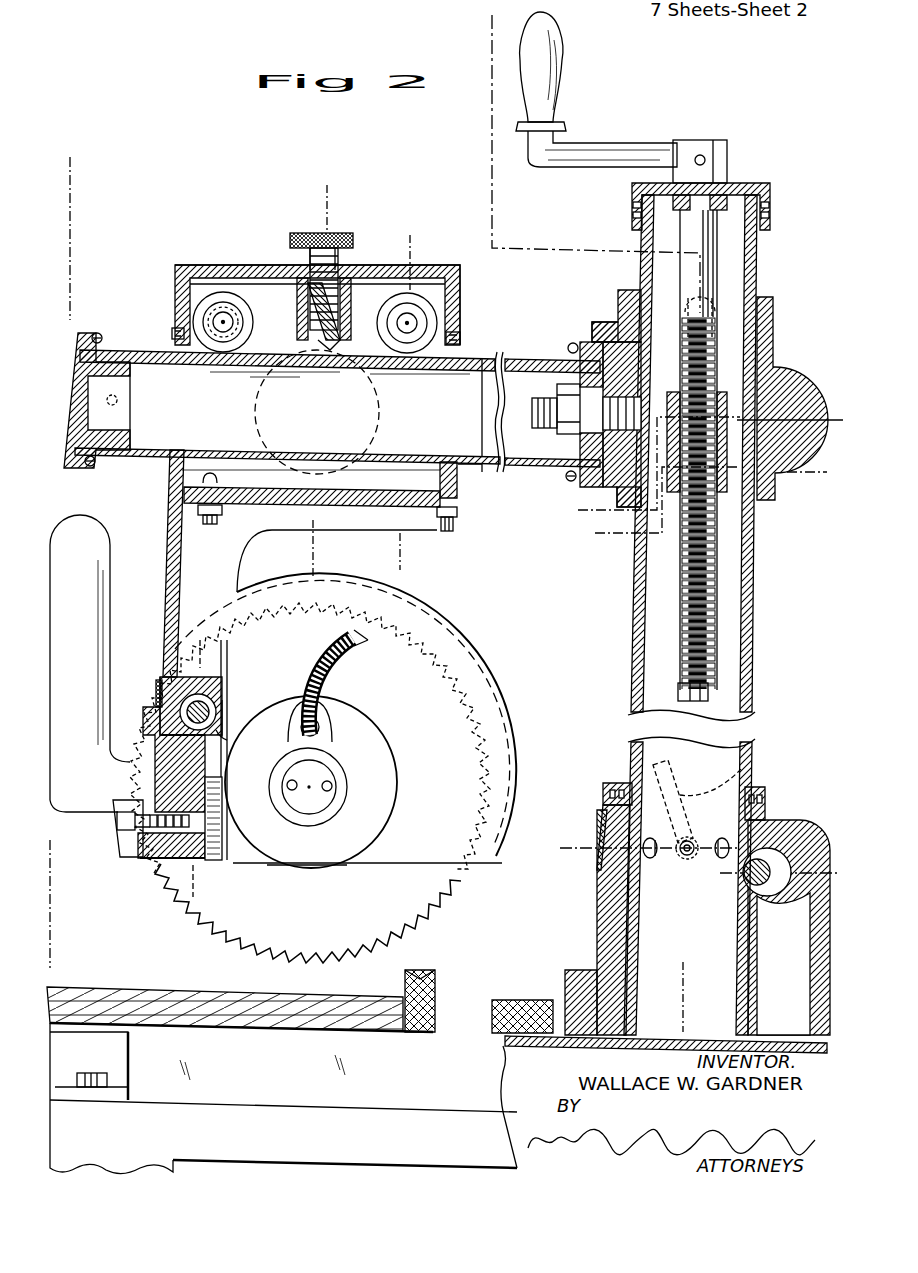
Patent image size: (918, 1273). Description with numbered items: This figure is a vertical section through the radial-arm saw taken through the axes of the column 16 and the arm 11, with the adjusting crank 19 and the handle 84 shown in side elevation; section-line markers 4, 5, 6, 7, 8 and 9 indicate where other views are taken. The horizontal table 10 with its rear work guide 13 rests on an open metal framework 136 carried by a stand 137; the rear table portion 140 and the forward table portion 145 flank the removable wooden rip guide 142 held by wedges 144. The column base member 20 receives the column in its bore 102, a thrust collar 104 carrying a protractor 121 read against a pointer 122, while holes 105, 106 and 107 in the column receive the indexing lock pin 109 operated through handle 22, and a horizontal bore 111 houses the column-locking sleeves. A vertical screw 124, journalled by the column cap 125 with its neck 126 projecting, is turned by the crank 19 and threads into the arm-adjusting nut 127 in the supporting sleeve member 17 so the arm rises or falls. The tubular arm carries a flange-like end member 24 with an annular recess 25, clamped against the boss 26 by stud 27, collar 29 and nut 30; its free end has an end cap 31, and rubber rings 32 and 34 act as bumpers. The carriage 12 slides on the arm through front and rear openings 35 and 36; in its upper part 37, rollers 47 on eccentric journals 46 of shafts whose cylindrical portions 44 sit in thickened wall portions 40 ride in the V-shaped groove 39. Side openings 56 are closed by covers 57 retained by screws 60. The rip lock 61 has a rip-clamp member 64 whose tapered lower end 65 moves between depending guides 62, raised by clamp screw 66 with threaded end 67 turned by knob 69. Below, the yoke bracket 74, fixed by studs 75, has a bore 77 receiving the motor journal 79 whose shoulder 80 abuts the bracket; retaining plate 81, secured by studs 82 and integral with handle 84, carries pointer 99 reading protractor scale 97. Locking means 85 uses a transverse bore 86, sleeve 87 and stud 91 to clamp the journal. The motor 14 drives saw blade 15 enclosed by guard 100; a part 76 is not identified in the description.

The section line 4- 4 is at (62, 187).
The section line 5- 5 is at (386, 243).
The section line 6- 6 is at (512, 18).
The section line 7- 7 is at (585, 498).
The section line 8- 8 is at (600, 528).
The section line 9- 9 is at (568, 838).
The horizontal table 10 is at (176, 652).
The radial arm 11 is at (312, 197).
The carriage 12 is at (485, 316).
The rear work guide 13 is at (565, 975).
The motor 14 is at (378, 762).
The saw blade 15 is at (258, 940).
The vertical column 16 is at (767, 651).
The arm-supporting-and-adjusting member 17 is at (798, 378).
The adjusting crank 19 is at (598, 146).
The column base member 20 is at (590, 938).
The column-indexing handle 22 is at (745, 768).
The flange-like end member 24 is at (600, 322).
The annular recess 25 is at (617, 497).
The boss 26 is at (622, 340).
The stud 27 is at (548, 430).
The collar 29 is at (566, 478).
The nut 30 is at (556, 395).
The end cap 31 is at (76, 368).
The rubber ring 32 is at (582, 342).
The rubber ring 34 is at (102, 336).
The front opening 35 is at (168, 458).
The rear opening 36 is at (468, 470).
The upper part of carriage 37 is at (180, 268).
The V-shaped groove 39 is at (484, 364).
The thickened side wall portion 40 is at (440, 286).
The main cylindrical portion 44 is at (238, 328).
The eccentric journal 46 is at (388, 318).
The carriage-supporting roller 47 is at (450, 308).
The side opening 56 is at (283, 458).
The cover 57 is at (380, 430).
The screws 60 is at (462, 336).
The rip lock 61 is at (363, 260).
The depending guides 62 is at (297, 358).
The rip-clamp member 64 is at (352, 286).
The tapered lower end 65 is at (320, 358).
The clamp screw 66 is at (300, 278).
The threaded lower end 67 is at (233, 322).
The knob 69 is at (343, 240).
The yoke bracket 74 is at (172, 580).
The studs 75 is at (452, 532).
The pivot housing 76 is at (165, 855).
The horizontal bore 77 is at (172, 862).
The journal 79 is at (224, 856).
The annular shoulder 80 is at (226, 735).
The retaining plate 81 is at (132, 856).
The studs 82 is at (118, 822).
The L-shaped handle 84 is at (110, 632).
The locking means 85 is at (218, 690).
The transverse bore 86 is at (226, 668).
The locking sleeve 87 is at (212, 708).
The stud 91 is at (190, 738).
The protractor scale 97 is at (160, 680).
The pointer 99 is at (156, 690).
The guard 100 is at (486, 668).
The bore 102 is at (620, 895).
The thrust collar 104 is at (767, 798).
The indexing hole 105 is at (688, 840).
The indexing hole 106 is at (652, 858).
The indexing hole 107 is at (722, 858).
The indexing lock pin 109 is at (687, 855).
The horizontal bore 111 is at (812, 815).
The protractor 121 is at (600, 790).
The pointer 122 is at (600, 840).
The vertical screw 124 is at (720, 323).
The column cap 125 is at (748, 192).
The neck 126 is at (712, 185).
The arm-adjusting nut 127 is at (722, 492).
The metal framework 136 is at (494, 1108).
The stand 137 is at (272, 1150).
The rear table portion 140 is at (522, 976).
The auxiliary rip guide 142 is at (440, 944).
The wedges 144 is at (442, 1034).
The table portion 145 is at (248, 1030).